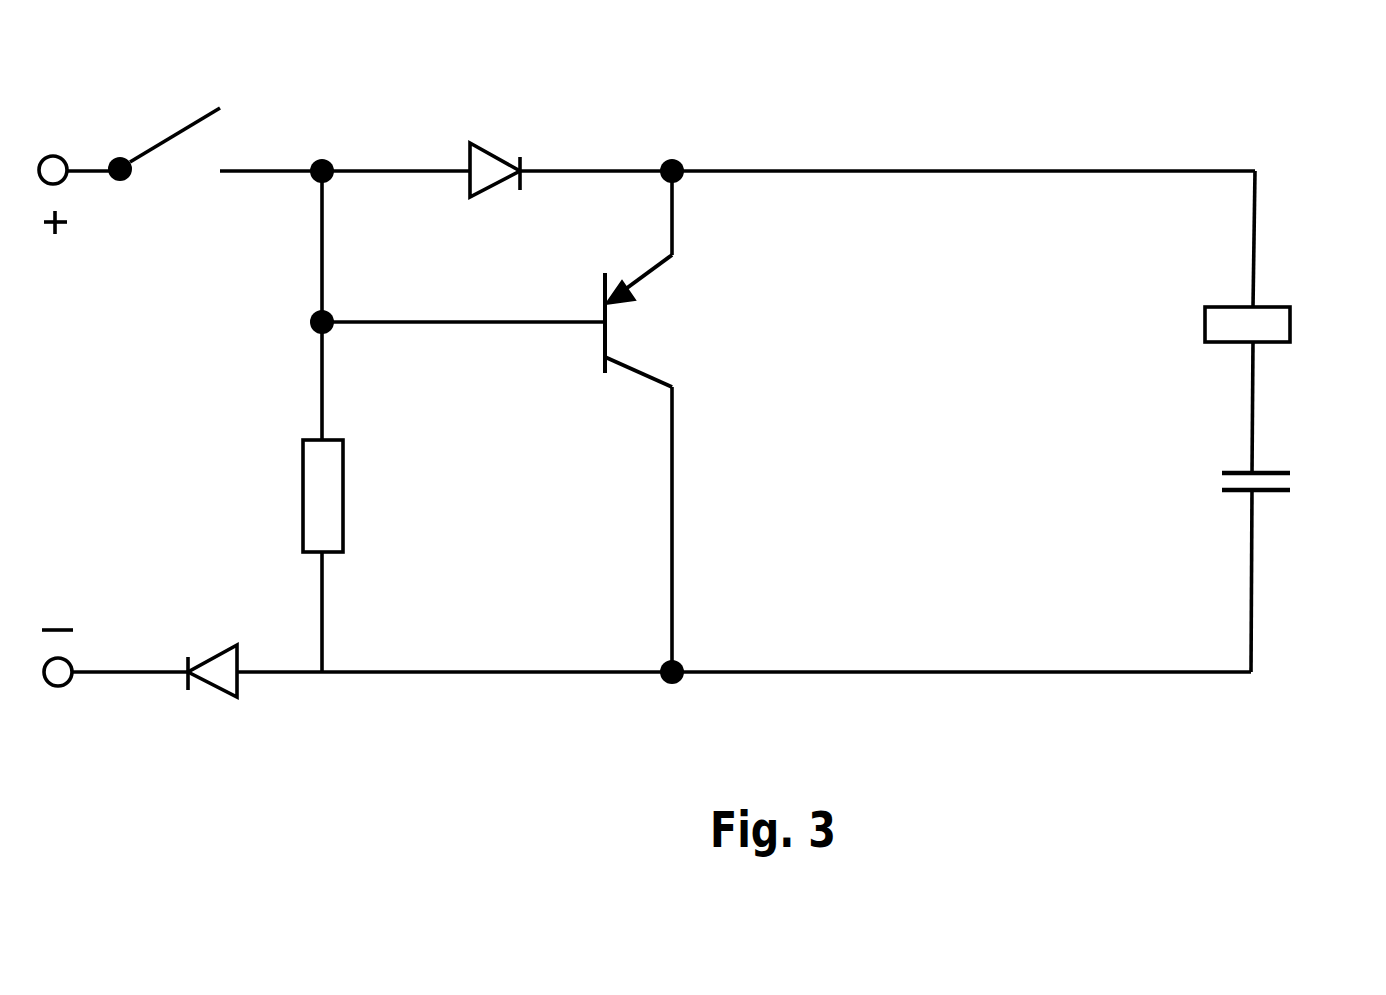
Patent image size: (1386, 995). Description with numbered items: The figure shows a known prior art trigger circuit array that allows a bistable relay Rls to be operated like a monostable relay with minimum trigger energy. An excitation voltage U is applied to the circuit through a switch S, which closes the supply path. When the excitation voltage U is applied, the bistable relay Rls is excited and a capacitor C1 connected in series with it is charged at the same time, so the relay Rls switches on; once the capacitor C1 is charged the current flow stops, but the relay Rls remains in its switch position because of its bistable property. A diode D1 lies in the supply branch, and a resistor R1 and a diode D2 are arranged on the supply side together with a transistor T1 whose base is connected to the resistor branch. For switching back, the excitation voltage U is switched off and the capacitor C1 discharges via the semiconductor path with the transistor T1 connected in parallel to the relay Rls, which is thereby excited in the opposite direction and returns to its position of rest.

The switch S is at (175, 96).
The first diode D1 is at (495, 148).
The transistor T1 is at (670, 321).
The resistor R1 is at (361, 496).
The second diode D2 is at (189, 650).
The bistable relay Rls is at (1293, 327).
The capacitor C1 is at (1288, 475).
The excitation voltage U is at (155, 423).